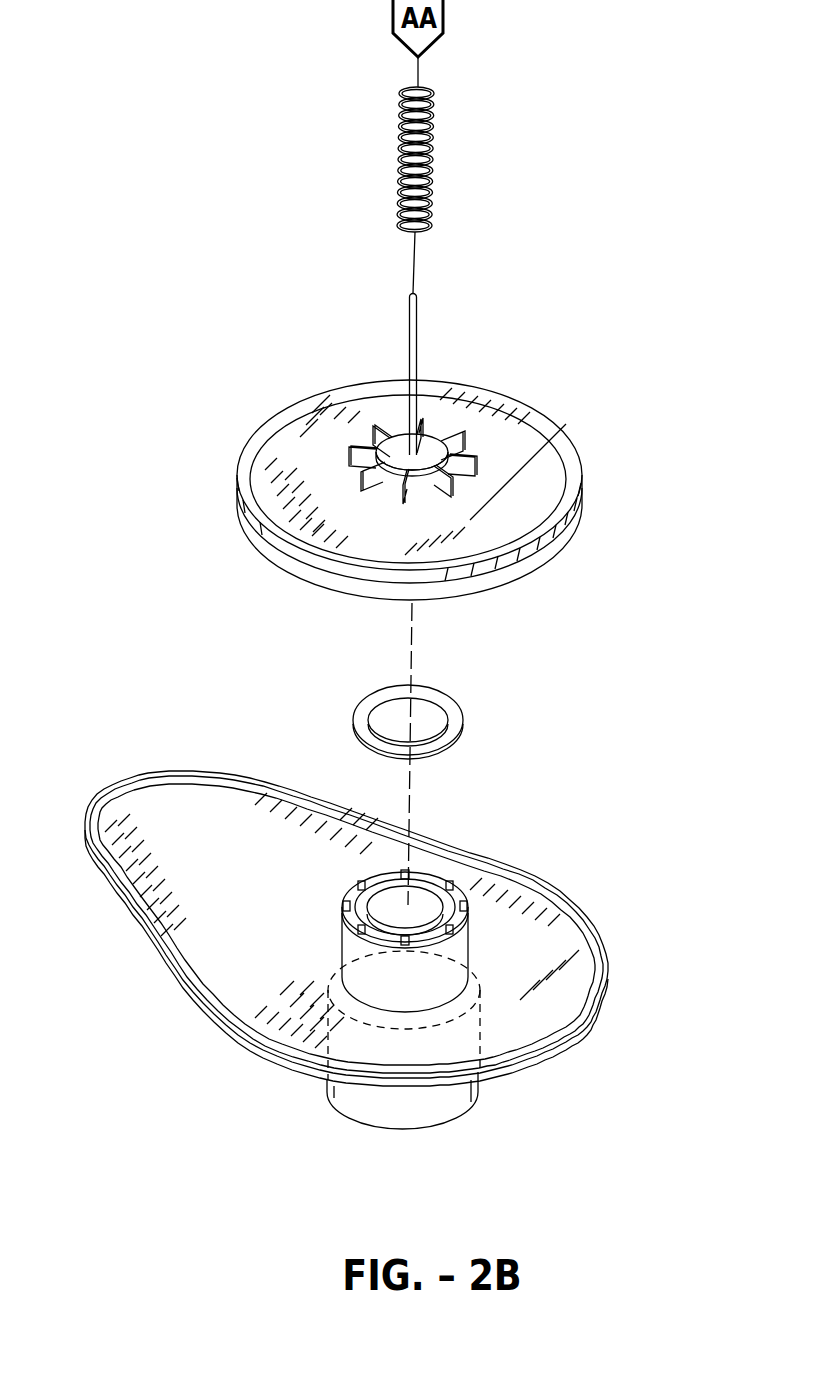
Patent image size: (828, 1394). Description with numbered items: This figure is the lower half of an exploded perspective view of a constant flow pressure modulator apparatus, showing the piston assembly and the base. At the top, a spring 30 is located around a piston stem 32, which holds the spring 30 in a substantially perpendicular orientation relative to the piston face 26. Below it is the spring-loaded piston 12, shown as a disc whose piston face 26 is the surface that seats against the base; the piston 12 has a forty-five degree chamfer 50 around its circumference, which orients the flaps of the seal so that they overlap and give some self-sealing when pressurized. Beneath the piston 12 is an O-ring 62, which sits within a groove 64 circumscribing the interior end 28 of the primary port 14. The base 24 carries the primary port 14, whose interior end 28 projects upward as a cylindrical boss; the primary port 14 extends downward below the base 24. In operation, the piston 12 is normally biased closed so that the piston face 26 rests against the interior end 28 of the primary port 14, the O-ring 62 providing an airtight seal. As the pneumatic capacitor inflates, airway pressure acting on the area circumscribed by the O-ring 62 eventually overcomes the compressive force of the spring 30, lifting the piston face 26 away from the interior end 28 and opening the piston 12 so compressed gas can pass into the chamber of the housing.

The spring 30 is at (432, 133).
The piston stem 32 is at (418, 338).
The spring-loaded piston 12 is at (525, 457).
The chamfer 50 is at (582, 482).
The piston face 26 is at (557, 550).
The O-ring 62 is at (455, 728).
The base 24 is at (195, 990).
The interior end 28 is at (458, 895).
The groove 64 is at (357, 917).
The primary port 14 is at (452, 1110).